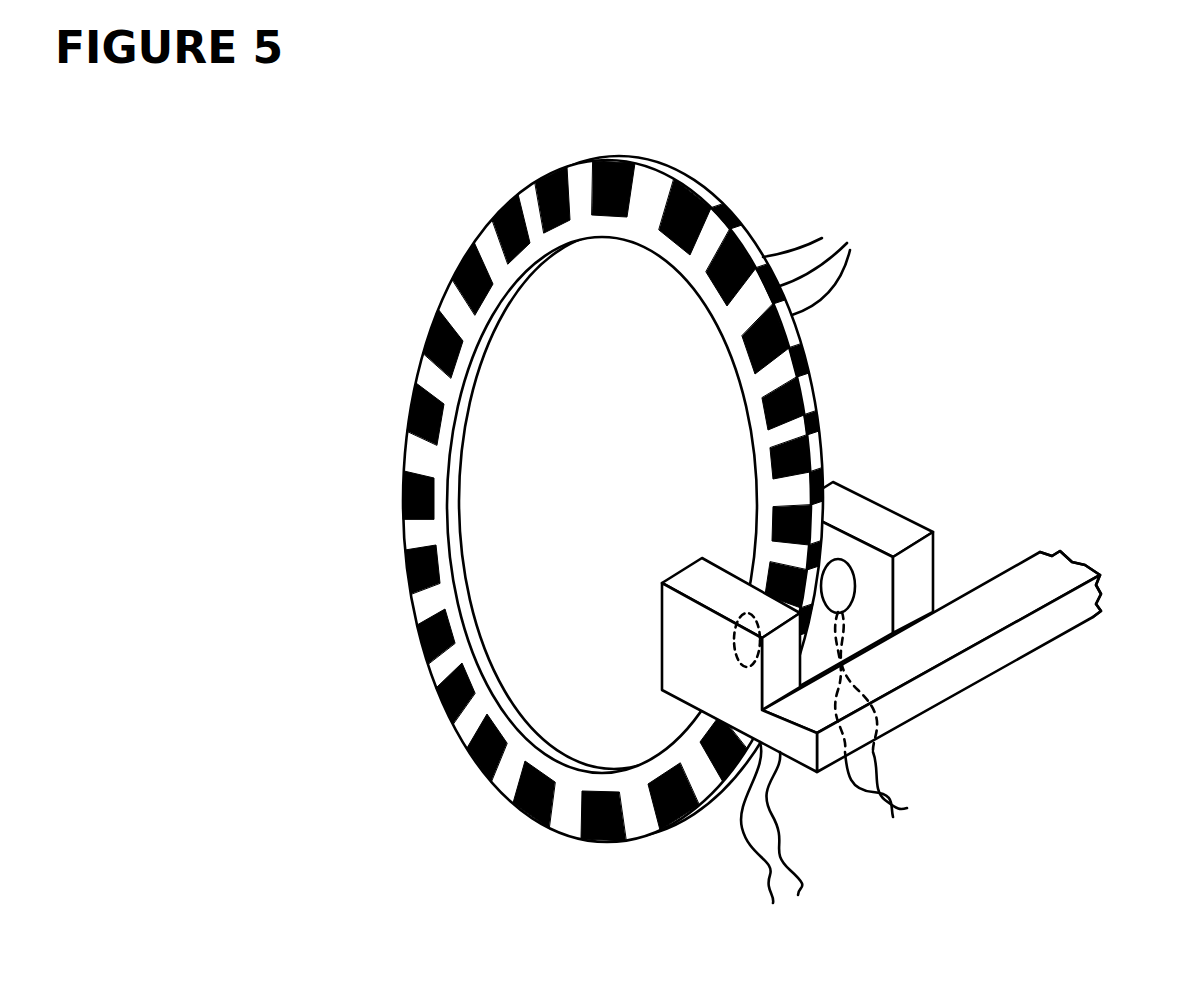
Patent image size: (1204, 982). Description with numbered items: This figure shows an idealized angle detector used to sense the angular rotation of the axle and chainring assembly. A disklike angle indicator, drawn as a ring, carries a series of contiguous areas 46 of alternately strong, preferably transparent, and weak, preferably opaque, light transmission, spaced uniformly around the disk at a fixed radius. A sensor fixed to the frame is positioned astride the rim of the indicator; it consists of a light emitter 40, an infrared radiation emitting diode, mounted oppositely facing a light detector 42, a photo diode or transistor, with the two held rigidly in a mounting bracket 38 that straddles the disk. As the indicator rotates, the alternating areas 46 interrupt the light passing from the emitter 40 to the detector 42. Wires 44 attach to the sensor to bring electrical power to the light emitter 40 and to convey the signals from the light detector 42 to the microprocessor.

The contiguous areas 46 is at (816, 261).
The light detector 42 is at (842, 560).
The mounting bracket 38 is at (1116, 603).
The light emitter 40 is at (735, 642).
The wires 44 is at (782, 843).